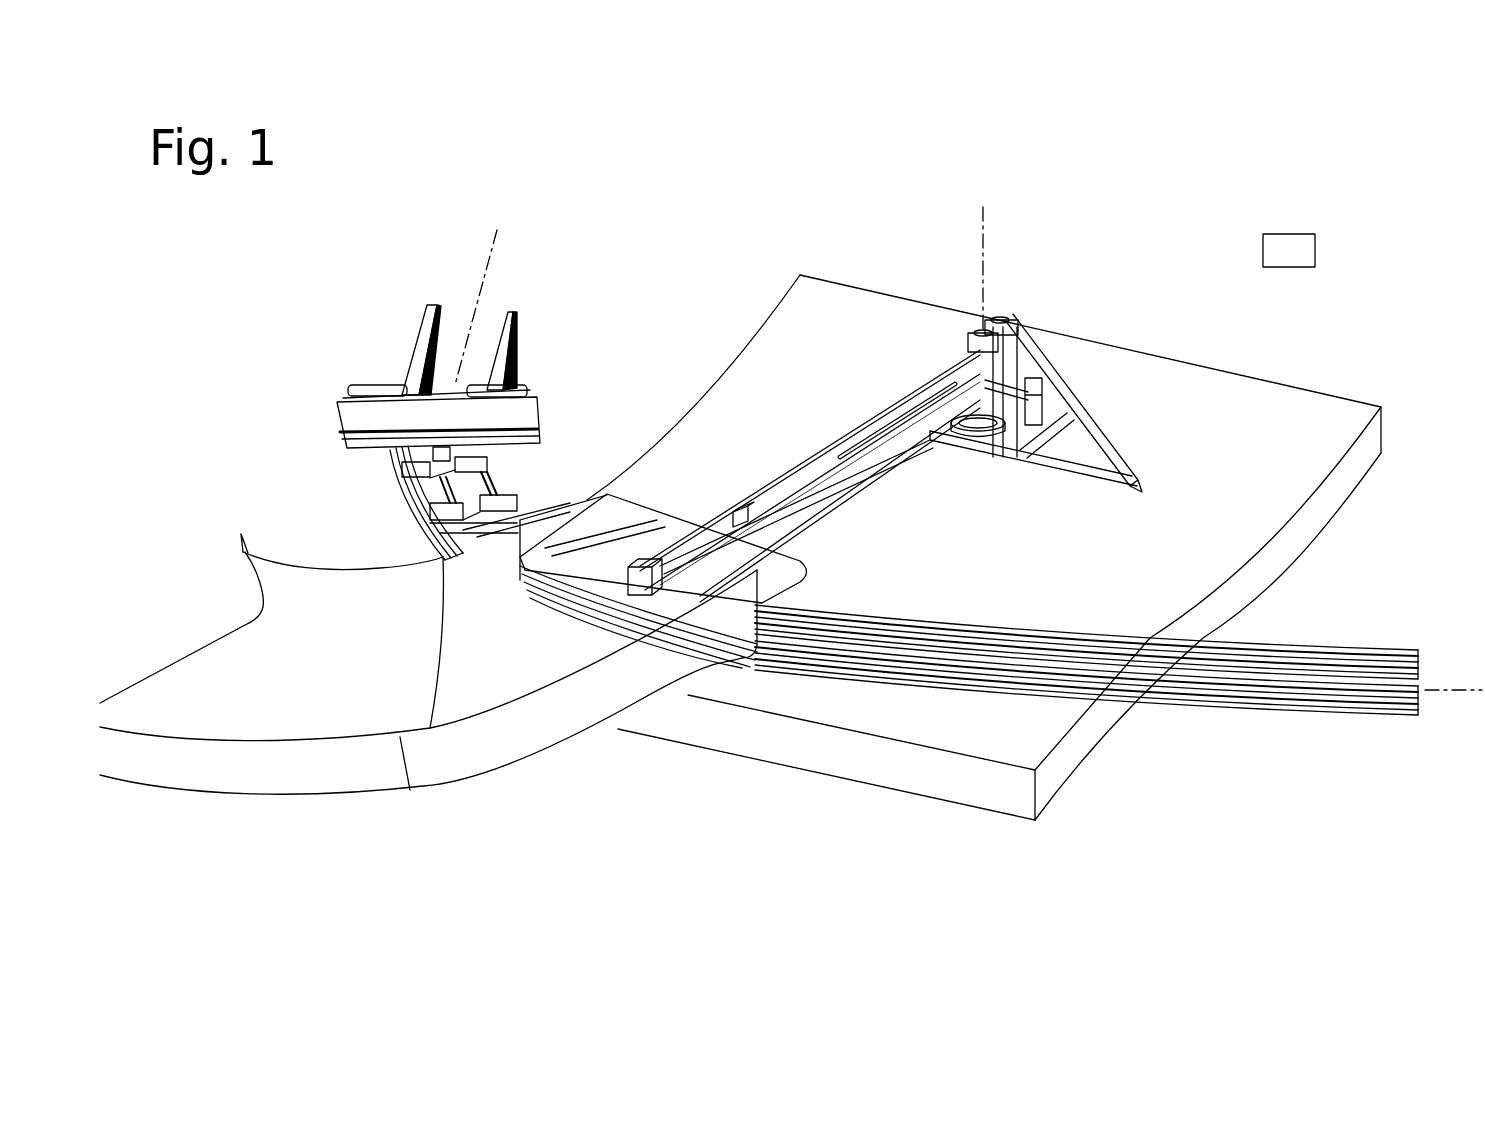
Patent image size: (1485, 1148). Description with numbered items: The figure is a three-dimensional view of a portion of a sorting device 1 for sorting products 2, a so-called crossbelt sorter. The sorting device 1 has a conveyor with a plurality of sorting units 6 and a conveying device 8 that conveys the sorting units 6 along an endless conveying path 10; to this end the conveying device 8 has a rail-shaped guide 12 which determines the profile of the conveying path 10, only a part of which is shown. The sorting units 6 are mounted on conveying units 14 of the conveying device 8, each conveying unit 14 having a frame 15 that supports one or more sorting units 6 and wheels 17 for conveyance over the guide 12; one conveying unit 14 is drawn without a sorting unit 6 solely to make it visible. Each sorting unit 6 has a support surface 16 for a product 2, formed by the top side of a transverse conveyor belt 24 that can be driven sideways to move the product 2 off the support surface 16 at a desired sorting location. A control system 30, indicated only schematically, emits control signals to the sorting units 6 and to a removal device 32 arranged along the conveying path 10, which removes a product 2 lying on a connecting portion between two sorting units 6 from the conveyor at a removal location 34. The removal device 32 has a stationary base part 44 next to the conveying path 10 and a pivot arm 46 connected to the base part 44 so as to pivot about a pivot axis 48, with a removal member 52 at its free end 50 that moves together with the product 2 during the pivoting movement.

The sorting device 1 is at (1179, 744).
The product 2 is at (680, 534).
The sorting unit 6 is at (332, 421).
The conveying device 8 is at (300, 500).
The conveying path 10 is at (494, 254).
The rail-shaped guide 12 is at (1316, 697).
The conveying unit 14 is at (505, 477).
The frame 15 is at (410, 510).
The support surface 16 is at (512, 415).
The wheels 17 is at (392, 452).
The conveyor belt 24 is at (543, 432).
The control system 30 is at (1289, 250).
The removal device 32 is at (912, 288).
The removal location 34 is at (497, 786).
The base part 44 is at (1063, 379).
The pivot arm 46 is at (822, 440).
The pivot axis 48 is at (988, 236).
The free end 50 is at (696, 586).
The removal member 52 is at (670, 598).